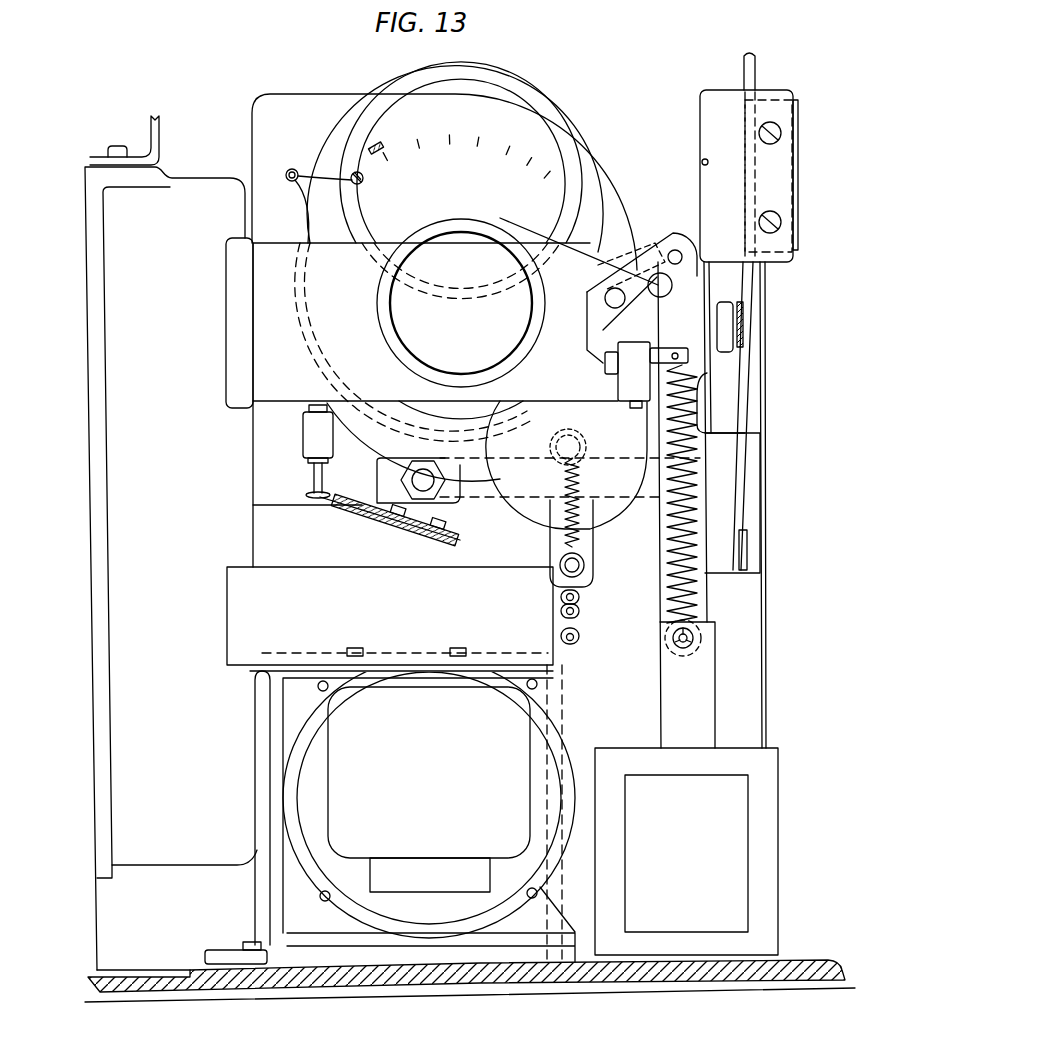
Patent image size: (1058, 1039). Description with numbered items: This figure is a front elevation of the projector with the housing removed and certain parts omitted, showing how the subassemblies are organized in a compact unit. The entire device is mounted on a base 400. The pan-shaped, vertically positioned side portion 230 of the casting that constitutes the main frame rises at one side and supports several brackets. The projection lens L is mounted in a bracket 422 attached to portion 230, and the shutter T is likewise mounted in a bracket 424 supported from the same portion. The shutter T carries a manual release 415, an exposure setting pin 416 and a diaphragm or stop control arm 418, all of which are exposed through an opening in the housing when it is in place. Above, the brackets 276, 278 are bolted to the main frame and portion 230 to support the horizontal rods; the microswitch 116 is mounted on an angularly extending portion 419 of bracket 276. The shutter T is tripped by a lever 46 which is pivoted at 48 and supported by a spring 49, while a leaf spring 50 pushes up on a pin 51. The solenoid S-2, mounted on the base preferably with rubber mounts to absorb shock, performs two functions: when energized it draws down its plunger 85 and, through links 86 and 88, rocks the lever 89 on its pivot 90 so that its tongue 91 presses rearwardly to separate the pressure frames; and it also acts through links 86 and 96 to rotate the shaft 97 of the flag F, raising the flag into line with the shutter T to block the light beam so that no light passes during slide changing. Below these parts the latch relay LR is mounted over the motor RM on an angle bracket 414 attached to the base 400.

The base 400 is at (795, 962).
The side portion 230 is at (176, 195).
The bracket 278 is at (160, 147).
The bracket 424 is at (306, 106).
The projection lens L is at (372, 290).
The manual release 415 is at (289, 170).
The exposure setting pin 416 is at (351, 177).
The shutter T is at (368, 163).
The diaphragm or stop control arm 418 is at (375, 145).
The bracket 422 is at (271, 403).
The link 96 is at (644, 256).
The shaft 97 is at (622, 303).
The bracket 276 is at (742, 75).
The microswitch 116 is at (780, 180).
The angularly extending portion 419 is at (798, 216).
The pivot 90 is at (712, 505).
The lever 89 is at (743, 326).
The tongue 91 is at (718, 378).
The link 88 is at (738, 500).
The link 86 is at (664, 566).
The plunger 85 is at (708, 700).
The flag F is at (570, 479).
The lever 46 is at (648, 497).
The spring 49 is at (560, 547).
The latch relay LR is at (252, 628).
The pivot 48 is at (410, 478).
The pin 51 is at (310, 483).
The leaf spring 50 is at (318, 498).
The angle bracket 414 is at (274, 774).
The motor RM is at (429, 810).
The solenoid S-2 is at (686, 851).